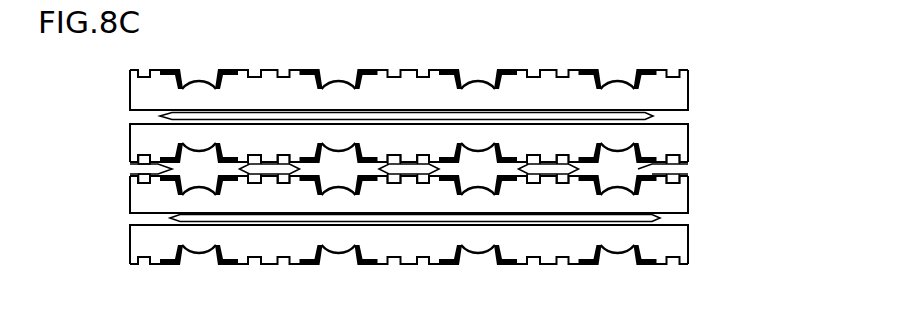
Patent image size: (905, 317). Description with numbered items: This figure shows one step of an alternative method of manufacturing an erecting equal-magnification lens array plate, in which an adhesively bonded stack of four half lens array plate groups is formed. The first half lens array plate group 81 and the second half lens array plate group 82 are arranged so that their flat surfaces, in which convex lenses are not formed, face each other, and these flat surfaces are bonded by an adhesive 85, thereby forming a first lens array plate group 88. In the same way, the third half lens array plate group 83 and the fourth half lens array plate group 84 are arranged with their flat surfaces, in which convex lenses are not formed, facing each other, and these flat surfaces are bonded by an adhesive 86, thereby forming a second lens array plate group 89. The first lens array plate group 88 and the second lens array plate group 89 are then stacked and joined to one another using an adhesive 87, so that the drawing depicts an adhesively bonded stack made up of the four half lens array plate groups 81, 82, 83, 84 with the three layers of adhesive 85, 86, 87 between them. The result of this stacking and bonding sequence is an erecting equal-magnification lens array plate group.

The first half lens array plate group 81 is at (688, 90).
The second half lens array plate group 82 is at (688, 138).
The third half lens array plate group 83 is at (688, 192).
The fourth half lens array plate group 84 is at (688, 242).
The adhesive 85 is at (614, 116).
The adhesive 86 is at (614, 219).
The adhesive 87 is at (545, 172).
The first lens array plate group 88 is at (469, 91).
The second lens array plate group 89 is at (469, 246).